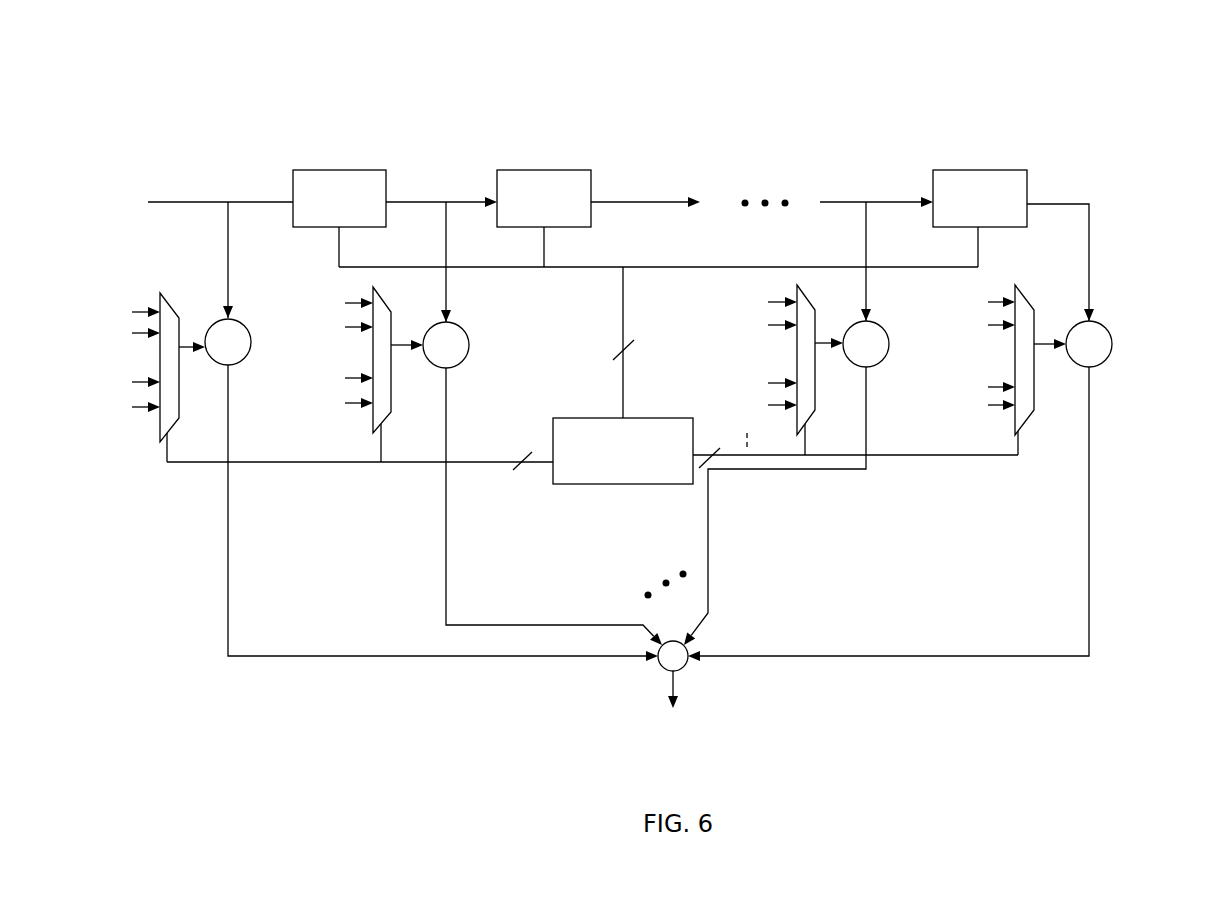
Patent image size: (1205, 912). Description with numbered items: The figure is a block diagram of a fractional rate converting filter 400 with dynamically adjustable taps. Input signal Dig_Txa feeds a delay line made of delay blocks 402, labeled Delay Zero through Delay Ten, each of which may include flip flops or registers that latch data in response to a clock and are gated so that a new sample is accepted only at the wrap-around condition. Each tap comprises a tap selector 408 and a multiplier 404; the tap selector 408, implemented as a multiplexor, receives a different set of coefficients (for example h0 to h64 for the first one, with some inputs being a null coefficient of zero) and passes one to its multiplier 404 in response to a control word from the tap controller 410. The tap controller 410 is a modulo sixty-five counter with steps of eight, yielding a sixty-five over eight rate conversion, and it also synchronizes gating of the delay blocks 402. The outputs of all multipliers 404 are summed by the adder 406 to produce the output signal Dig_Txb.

The fractional rate converting filter 400 is at (700, 62).
The delay block 402 is at (339, 168).
The multiplier 404 is at (238, 364).
The adder 406 is at (660, 672).
The tap selector 408 is at (160, 432).
The tap controller 410 is at (600, 490).